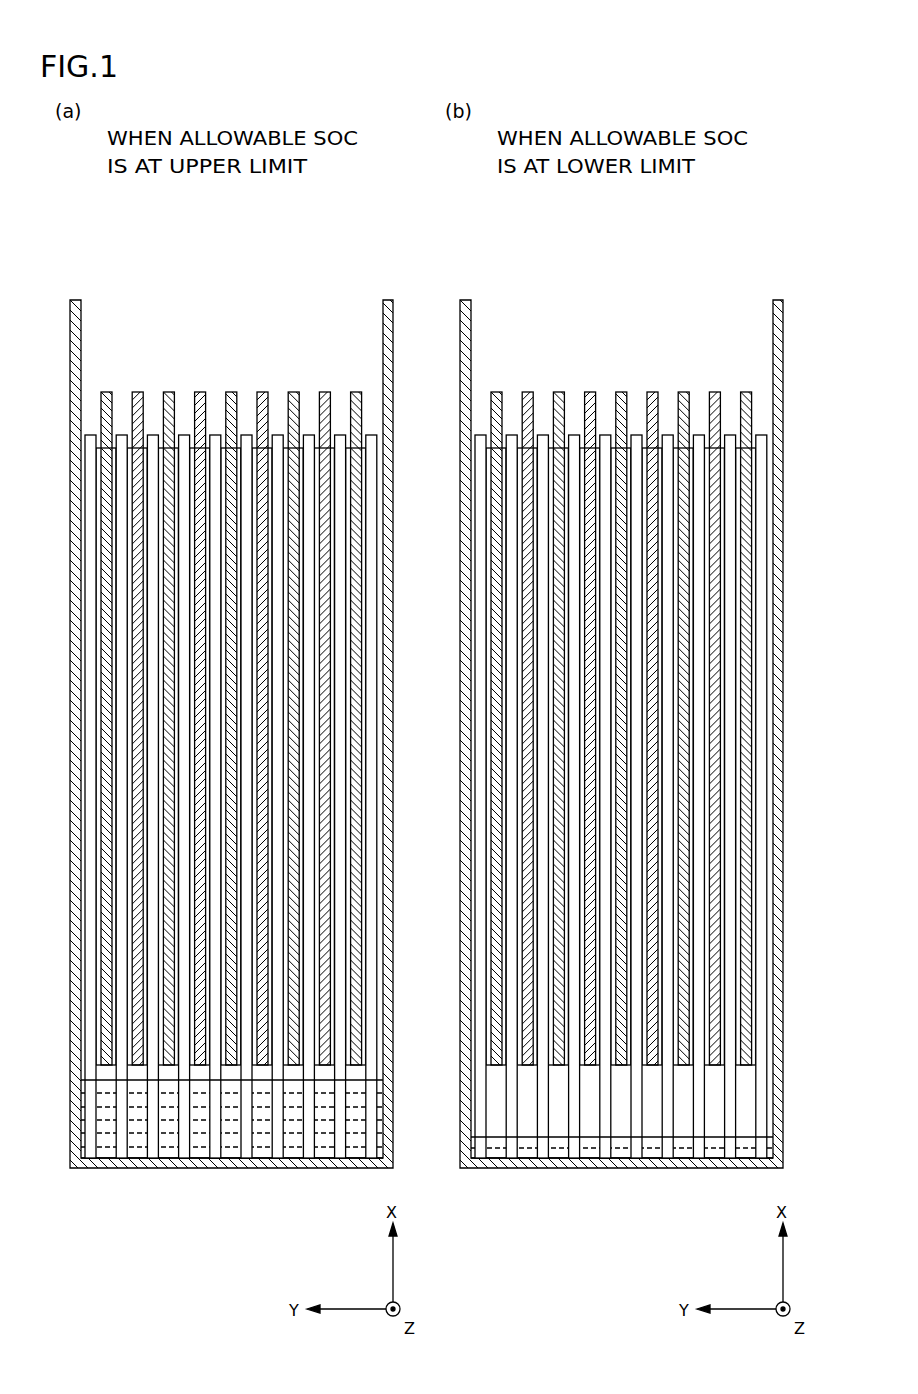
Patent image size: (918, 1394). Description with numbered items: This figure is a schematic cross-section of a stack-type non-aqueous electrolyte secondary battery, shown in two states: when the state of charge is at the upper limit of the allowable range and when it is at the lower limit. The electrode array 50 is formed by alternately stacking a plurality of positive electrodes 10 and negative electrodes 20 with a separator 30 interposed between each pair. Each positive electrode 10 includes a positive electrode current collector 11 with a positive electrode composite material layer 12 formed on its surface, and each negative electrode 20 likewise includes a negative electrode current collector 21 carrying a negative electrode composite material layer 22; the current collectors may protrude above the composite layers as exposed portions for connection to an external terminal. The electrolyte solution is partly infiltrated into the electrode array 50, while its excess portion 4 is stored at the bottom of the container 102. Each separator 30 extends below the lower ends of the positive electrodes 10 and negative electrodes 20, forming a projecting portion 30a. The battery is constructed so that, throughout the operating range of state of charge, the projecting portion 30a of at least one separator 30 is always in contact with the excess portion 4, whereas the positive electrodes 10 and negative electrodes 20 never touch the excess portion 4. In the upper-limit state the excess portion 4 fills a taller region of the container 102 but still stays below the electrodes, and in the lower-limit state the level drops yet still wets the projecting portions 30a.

The excess portion 4 is at (167, 1147).
The positive electrode 10 is at (418, 649).
The positive electrode current collector 11 is at (200, 392).
The positive electrode composite material layer 12 is at (209, 447).
The negative electrode 20 is at (426, 632).
The negative electrode current collector 21 is at (241, 447).
The negative electrode composite material layer 22 is at (276, 447).
The separator 30 is at (311, 434).
The projecting portion 30a is at (732, 1104).
The electrode array 50 is at (386, 261).
The container 102 is at (92, 1168).